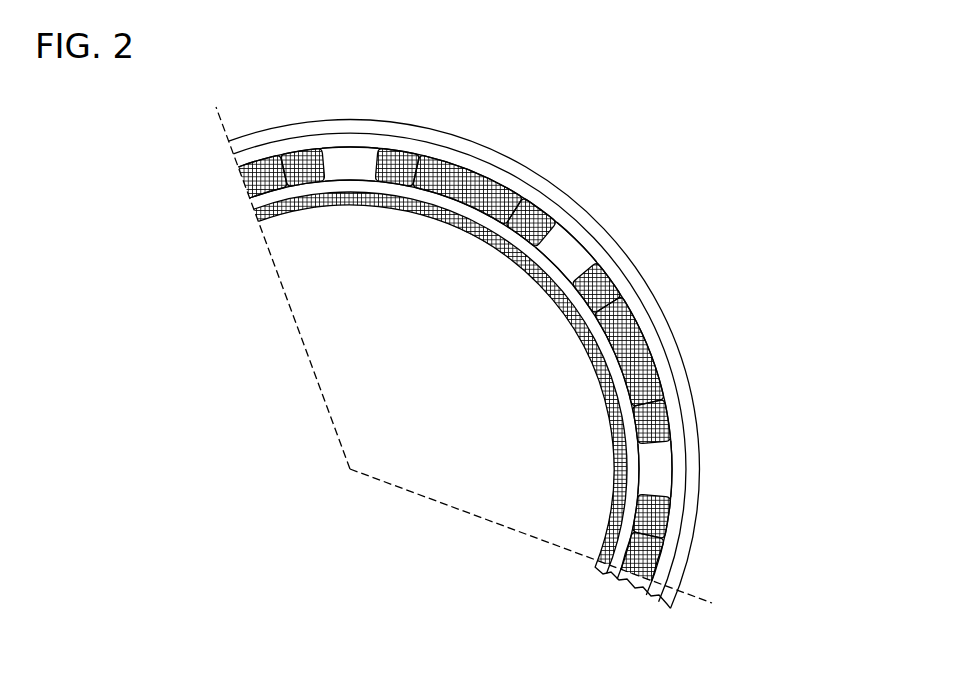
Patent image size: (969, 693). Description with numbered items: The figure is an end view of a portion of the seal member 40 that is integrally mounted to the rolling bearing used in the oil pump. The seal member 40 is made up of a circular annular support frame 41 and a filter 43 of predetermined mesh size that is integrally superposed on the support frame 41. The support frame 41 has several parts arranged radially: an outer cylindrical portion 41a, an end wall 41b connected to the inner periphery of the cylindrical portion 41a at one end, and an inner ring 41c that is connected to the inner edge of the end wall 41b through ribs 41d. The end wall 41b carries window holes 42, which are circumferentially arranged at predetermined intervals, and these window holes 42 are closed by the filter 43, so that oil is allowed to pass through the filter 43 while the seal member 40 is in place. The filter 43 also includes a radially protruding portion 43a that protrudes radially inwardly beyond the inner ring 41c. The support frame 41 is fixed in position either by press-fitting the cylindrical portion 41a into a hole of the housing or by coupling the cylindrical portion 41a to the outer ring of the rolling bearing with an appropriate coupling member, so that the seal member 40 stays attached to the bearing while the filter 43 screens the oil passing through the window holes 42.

The seal member 40 is at (502, 357).
The support frame 41 is at (506, 363).
The cylindrical portion 41a is at (653, 308).
The end wall 41b is at (655, 348).
The inner ring 41c is at (595, 330).
The ribs 41d is at (568, 250).
The window holes 42 is at (663, 403).
The filter 43 is at (513, 358).
The radially protruding portion 43a is at (612, 480).